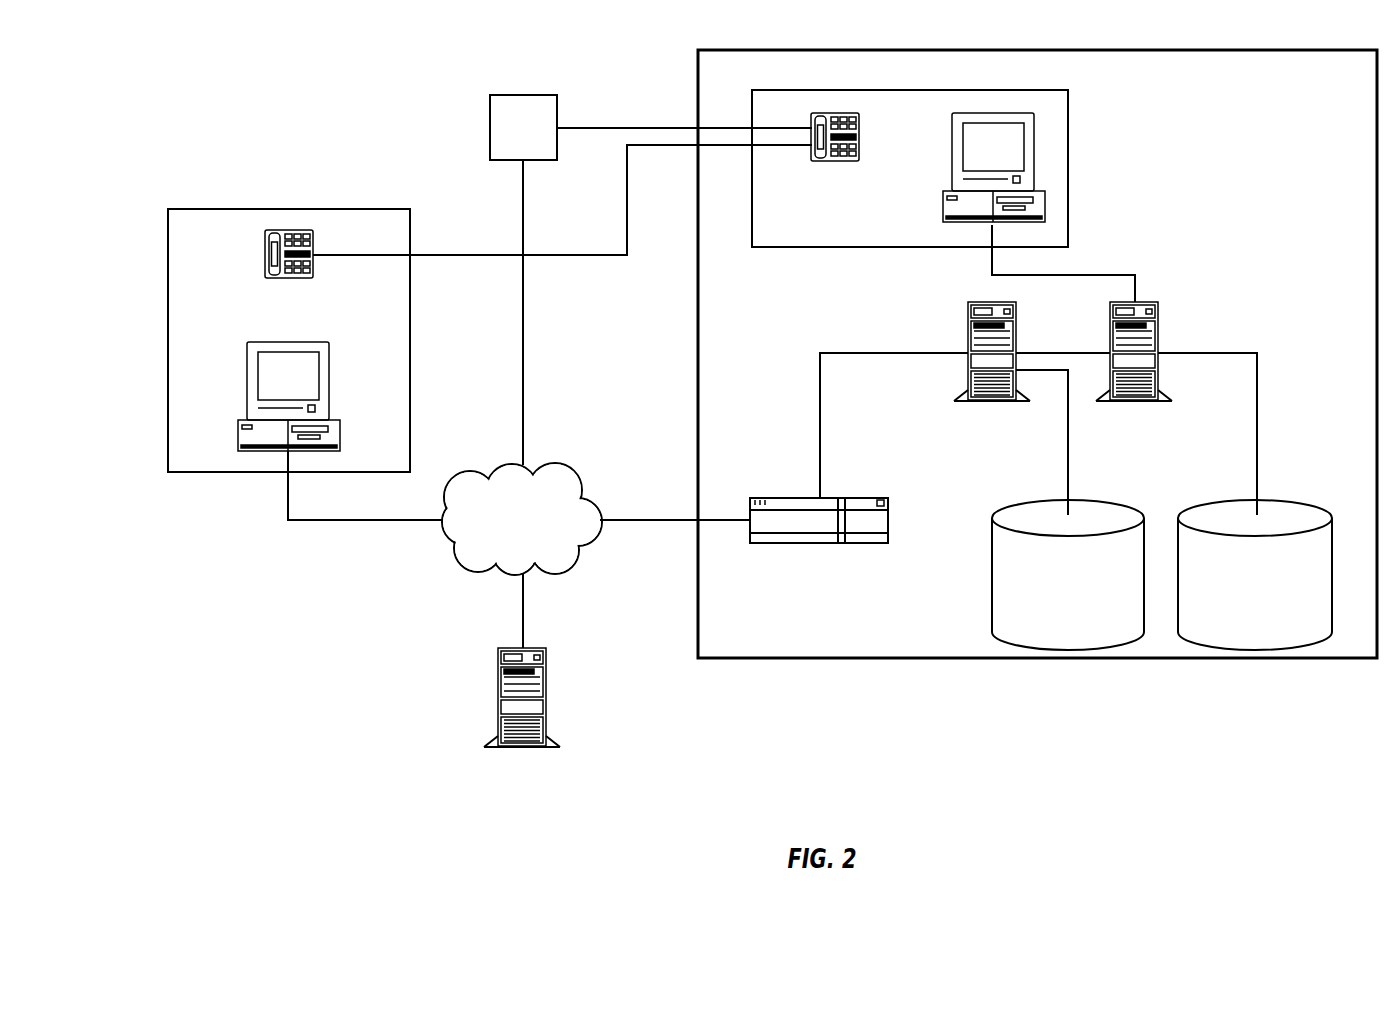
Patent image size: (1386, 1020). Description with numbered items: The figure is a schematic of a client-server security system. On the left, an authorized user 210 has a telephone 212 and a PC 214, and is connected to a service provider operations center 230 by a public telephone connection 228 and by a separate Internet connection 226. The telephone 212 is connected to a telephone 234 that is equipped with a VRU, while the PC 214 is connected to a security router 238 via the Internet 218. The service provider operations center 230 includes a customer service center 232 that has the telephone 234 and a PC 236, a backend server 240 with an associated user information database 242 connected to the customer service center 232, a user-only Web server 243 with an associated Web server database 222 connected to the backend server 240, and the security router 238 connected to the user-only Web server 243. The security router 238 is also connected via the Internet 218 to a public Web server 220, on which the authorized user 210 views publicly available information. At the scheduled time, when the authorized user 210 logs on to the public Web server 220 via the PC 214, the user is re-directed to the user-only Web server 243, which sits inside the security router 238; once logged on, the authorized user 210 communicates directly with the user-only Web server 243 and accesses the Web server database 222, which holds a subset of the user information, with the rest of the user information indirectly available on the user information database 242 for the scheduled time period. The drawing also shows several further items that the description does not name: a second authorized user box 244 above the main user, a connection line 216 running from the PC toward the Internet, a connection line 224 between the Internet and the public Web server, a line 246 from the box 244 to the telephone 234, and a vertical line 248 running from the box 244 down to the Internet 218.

The authorized user 210 is at (230, 473).
The telephone 212 is at (263, 257).
The PC 214 is at (247, 383).
The internet connection 216 is at (378, 521).
The Internet 218 is at (500, 468).
The public Web server 220 is at (497, 697).
The Web server database 222 is at (1022, 504).
The connection to public web server 224 is at (523, 612).
The Internet connection 226 is at (690, 521).
The public telephone connection 228 is at (627, 212).
The service provider operations center 230 is at (1315, 50).
The customer service center 232 is at (808, 248).
The telephone 234 is at (859, 137).
The PC 236 is at (1037, 150).
The security router 238 is at (815, 498).
The backend server 240 is at (1158, 322).
The user information database 242 is at (1262, 500).
The user-only Web server 243 is at (968, 322).
The authorized user device 244 is at (512, 162).
The telephone line 246 is at (645, 128).
The internet connection 248 is at (523, 348).